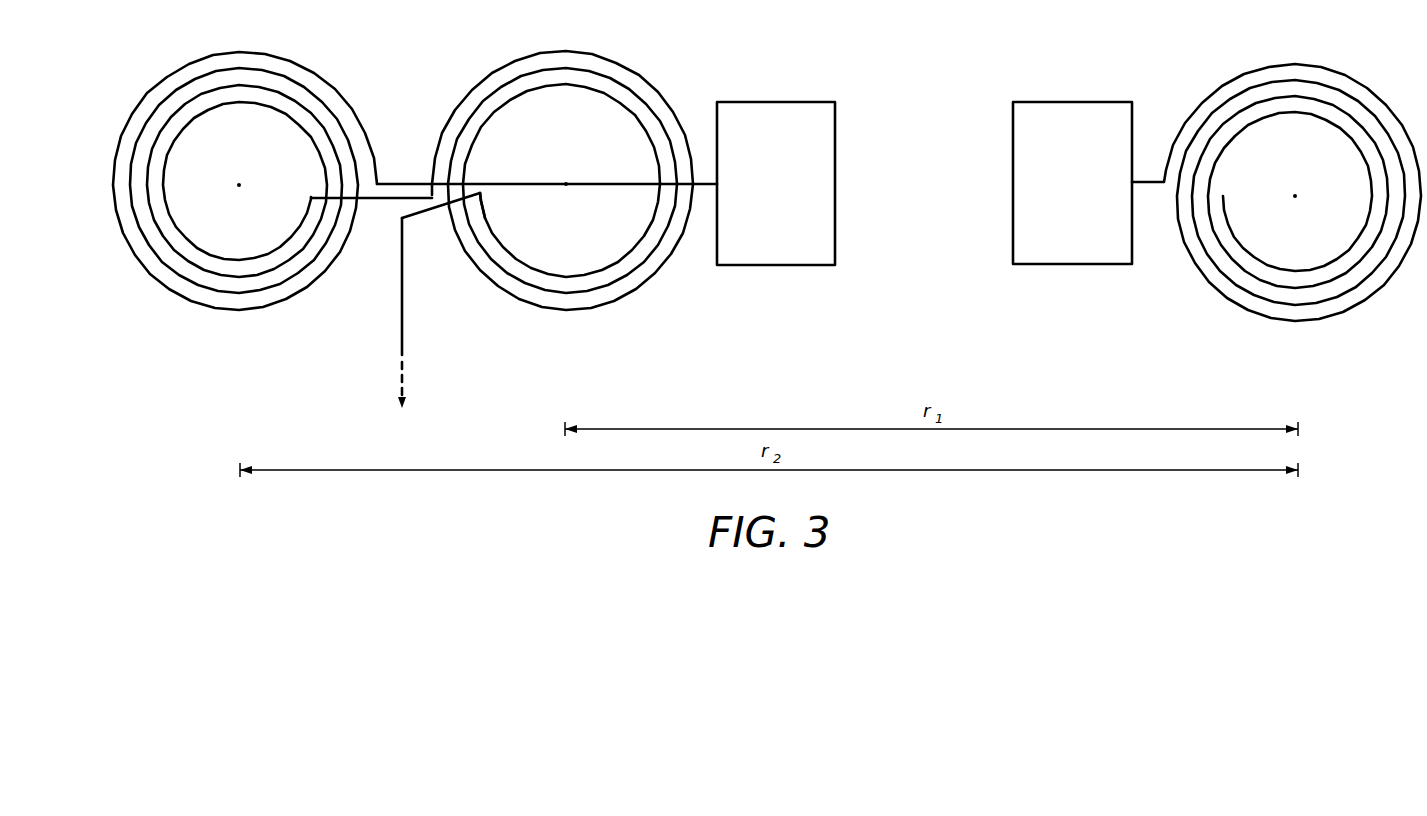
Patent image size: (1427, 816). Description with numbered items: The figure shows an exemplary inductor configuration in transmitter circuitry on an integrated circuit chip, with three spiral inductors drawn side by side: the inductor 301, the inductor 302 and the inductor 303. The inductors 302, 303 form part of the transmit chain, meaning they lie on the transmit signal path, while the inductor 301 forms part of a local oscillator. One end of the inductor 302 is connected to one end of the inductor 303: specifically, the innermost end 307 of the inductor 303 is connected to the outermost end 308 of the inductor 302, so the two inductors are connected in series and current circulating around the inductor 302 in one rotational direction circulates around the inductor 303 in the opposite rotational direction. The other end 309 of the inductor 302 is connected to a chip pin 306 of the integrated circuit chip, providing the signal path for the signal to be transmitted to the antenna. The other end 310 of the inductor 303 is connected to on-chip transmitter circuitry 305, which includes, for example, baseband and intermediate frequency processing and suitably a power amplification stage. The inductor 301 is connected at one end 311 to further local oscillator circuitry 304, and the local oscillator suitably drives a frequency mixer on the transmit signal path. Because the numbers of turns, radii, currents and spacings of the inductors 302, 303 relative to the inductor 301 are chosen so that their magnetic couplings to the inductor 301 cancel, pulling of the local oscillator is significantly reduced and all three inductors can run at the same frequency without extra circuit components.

The inductor 301 is at (1347, 75).
The inductor 302 is at (630, 68).
The inductor 303 is at (310, 68).
The local oscillator circuitry 304 is at (1101, 102).
The on-chip transmitter circuitry 305 is at (807, 102).
The chip pin 306 is at (425, 428).
The innermost end of inductor 303 307 is at (311, 197).
The outermost end of inductor 302 308 is at (437, 206).
The other end of inductor 302 309 is at (482, 192).
The other end of inductor 303 310 is at (376, 183).
The end of inductor 301 311 is at (1162, 188).